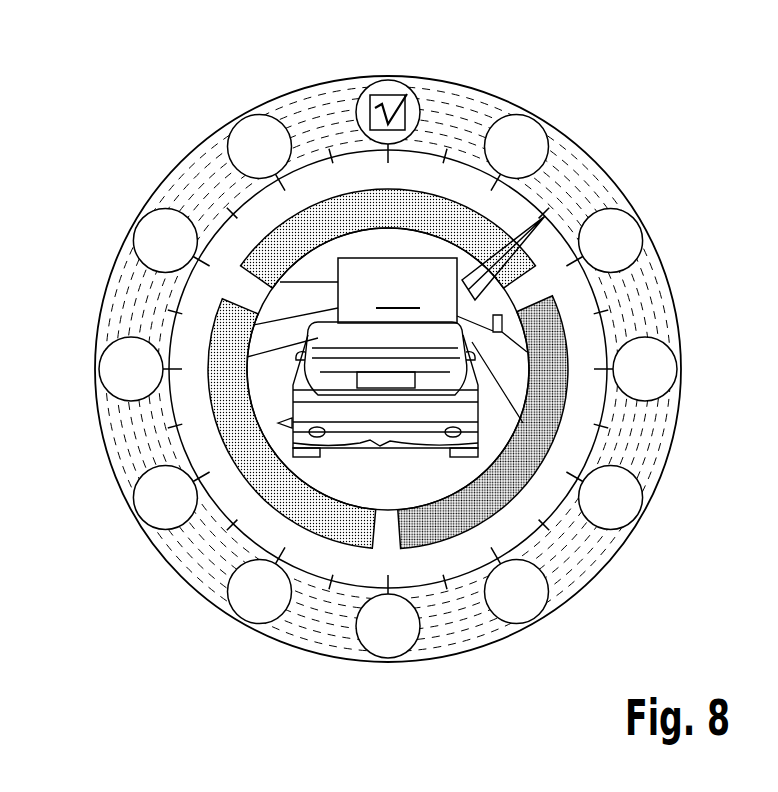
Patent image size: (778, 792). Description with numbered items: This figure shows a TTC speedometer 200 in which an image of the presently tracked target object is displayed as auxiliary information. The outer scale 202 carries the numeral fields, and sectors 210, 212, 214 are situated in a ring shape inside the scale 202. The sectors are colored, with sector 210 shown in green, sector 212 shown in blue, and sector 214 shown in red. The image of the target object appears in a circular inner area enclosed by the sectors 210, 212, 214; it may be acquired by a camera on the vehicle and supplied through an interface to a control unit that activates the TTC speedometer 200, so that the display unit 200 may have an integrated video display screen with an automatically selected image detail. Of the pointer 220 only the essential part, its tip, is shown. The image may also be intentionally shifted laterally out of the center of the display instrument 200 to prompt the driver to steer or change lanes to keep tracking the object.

The TTC speedometer 200 is at (130, 128).
The scale 202 is at (582, 148).
The sector 210 is at (413, 193).
The sector 212 is at (223, 440).
The sector 214 is at (532, 482).
The pointer 220 is at (548, 216).